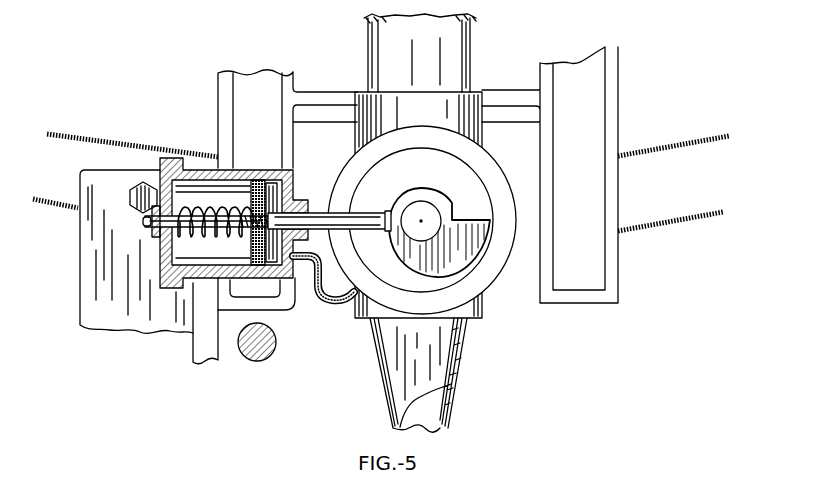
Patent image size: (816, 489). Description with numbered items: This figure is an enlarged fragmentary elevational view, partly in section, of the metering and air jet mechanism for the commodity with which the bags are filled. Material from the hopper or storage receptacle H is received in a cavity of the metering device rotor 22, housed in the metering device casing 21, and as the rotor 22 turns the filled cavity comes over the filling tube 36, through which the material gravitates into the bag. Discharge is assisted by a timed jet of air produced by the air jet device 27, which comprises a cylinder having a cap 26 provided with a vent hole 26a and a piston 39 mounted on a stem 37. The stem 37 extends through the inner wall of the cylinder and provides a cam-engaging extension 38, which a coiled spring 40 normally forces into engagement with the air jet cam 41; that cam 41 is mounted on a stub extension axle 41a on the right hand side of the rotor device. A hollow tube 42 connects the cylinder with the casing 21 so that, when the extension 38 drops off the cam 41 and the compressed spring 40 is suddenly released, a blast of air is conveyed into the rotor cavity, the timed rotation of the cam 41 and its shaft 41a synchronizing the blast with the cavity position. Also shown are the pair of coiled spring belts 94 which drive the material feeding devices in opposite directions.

The hopper or storage receptacle H is at (478, 26).
The metering device casing 21 is at (498, 152).
The metering device rotor 22 is at (480, 190).
The cap 26 is at (161, 246).
The vent hole 26a is at (180, 257).
The air jet device 27 is at (245, 158).
The filling tube 36 is at (450, 367).
The stem 37 is at (146, 221).
The cam-engaging extension 38 is at (321, 212).
The piston 39 is at (262, 180).
The coiled spring 40 is at (192, 228).
The air jet cam 41 is at (467, 258).
The stub extension axle 41a is at (421, 220).
The hollow tube 42 is at (328, 306).
The coiled spring belts 94 is at (45, 198).